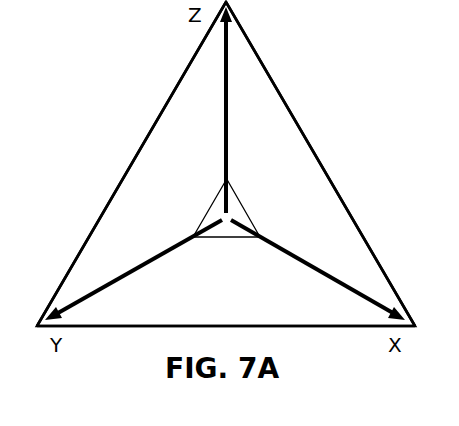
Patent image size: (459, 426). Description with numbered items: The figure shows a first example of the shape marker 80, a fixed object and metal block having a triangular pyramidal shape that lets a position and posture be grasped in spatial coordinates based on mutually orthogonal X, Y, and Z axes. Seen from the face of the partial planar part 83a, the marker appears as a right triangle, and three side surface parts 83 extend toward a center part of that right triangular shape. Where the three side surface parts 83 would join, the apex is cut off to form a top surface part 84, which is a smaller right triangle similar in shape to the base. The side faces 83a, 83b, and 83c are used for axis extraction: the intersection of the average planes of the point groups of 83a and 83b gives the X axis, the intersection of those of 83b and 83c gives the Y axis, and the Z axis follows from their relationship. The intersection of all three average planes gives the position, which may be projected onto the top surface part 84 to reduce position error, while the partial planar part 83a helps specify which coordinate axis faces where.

The shape marker 80 is at (145, 115).
The side surface parts 83 is at (276, 287).
The partial planar part 83a is at (310, 208).
The face (side surface part) 83b is at (307, 312).
The face (side surface part) 83c is at (143, 168).
The top surface part 84 is at (210, 208).